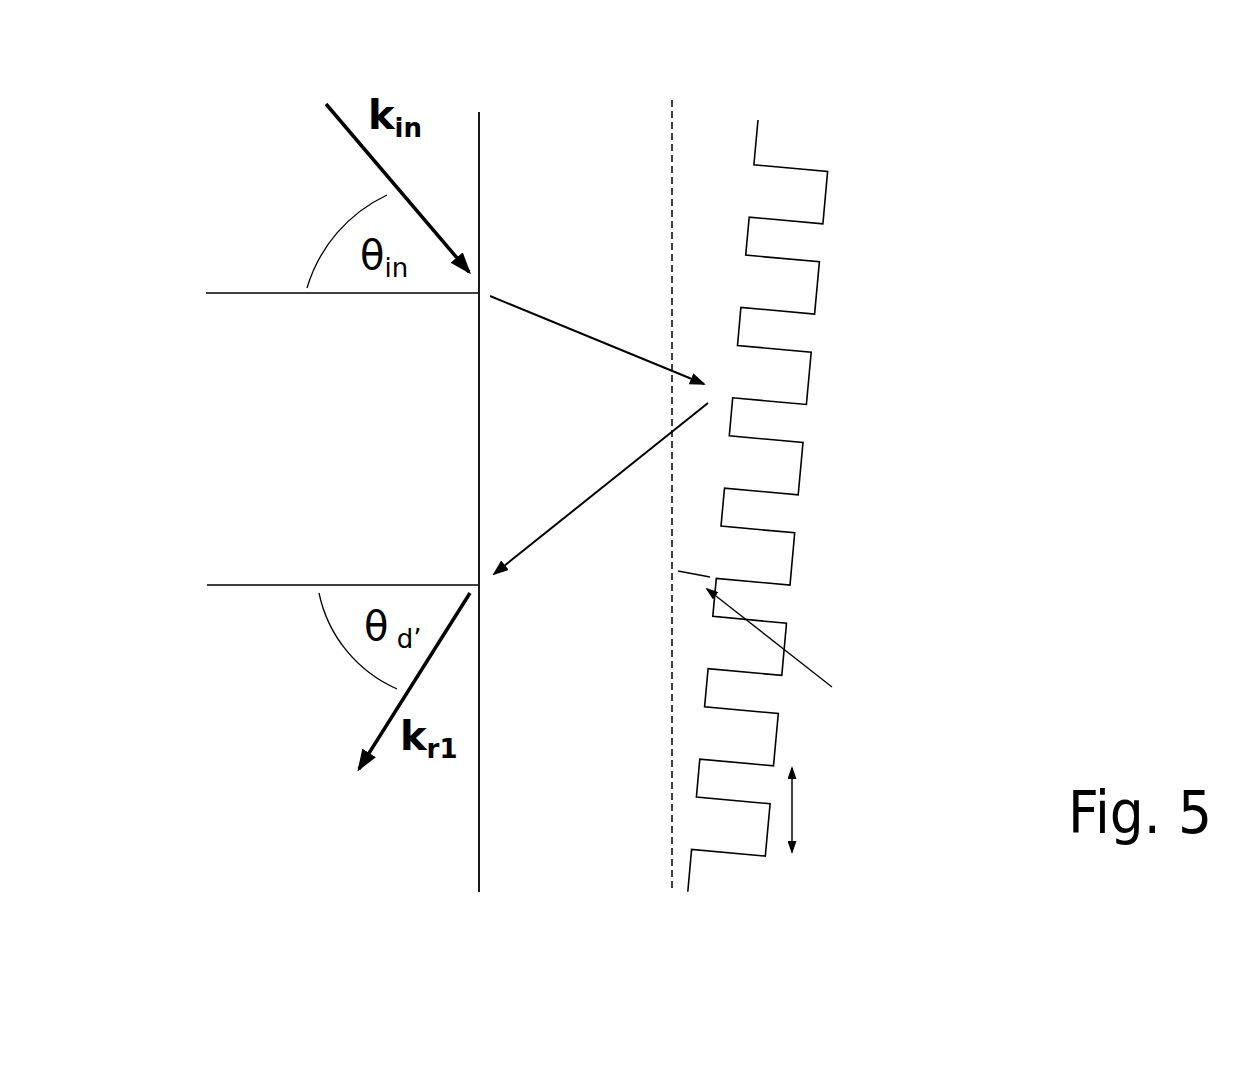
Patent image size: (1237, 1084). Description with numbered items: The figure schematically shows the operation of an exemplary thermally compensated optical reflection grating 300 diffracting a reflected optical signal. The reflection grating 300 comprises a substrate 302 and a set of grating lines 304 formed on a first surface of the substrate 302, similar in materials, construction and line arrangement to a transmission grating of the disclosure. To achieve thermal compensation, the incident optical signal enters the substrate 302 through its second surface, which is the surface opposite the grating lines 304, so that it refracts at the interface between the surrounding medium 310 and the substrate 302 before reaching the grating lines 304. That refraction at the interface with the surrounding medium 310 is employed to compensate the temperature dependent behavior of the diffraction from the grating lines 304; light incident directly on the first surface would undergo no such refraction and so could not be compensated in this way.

The optical reflection grating 300 is at (796, 496).
The substrate 302 is at (609, 828).
The grating lines 304 is at (836, 240).
The surrounding medium 310 is at (319, 853).